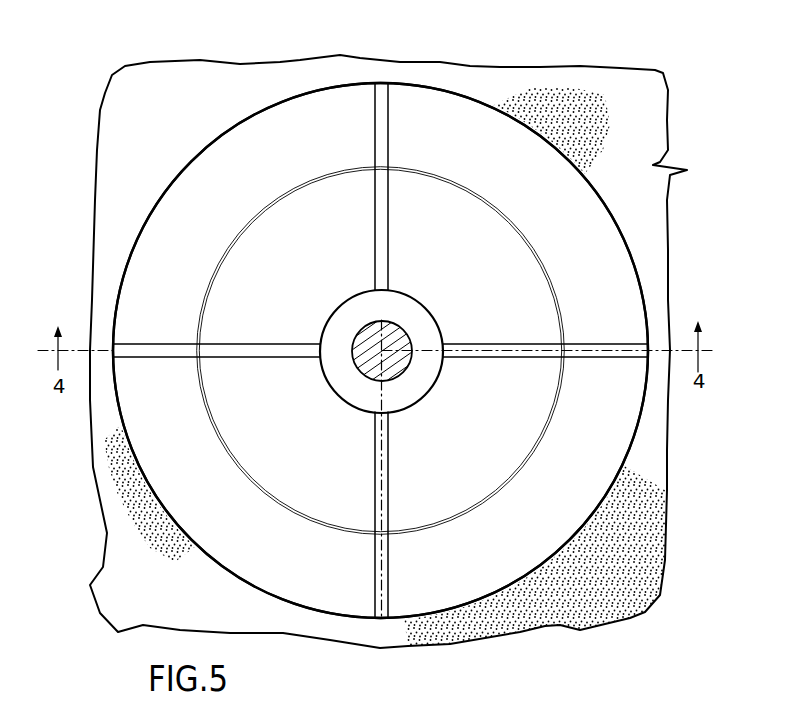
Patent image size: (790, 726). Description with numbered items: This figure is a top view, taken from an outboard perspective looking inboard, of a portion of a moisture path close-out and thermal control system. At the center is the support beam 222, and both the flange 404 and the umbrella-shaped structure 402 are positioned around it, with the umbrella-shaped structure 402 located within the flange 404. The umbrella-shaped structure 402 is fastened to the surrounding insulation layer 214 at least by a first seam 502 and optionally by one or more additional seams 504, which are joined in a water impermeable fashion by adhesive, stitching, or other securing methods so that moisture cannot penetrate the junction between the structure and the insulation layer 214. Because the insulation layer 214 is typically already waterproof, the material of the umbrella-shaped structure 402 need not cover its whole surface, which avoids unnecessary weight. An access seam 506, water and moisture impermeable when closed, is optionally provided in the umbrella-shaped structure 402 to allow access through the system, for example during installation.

The insulation layer 214 is at (602, 100).
The umbrella-shaped structure 402 is at (218, 192).
The first seam 502 is at (283, 603).
The additional seam 504 is at (340, 532).
The access seam 506 is at (373, 157).
The flange 404 is at (345, 328).
The support beam 222 is at (352, 357).